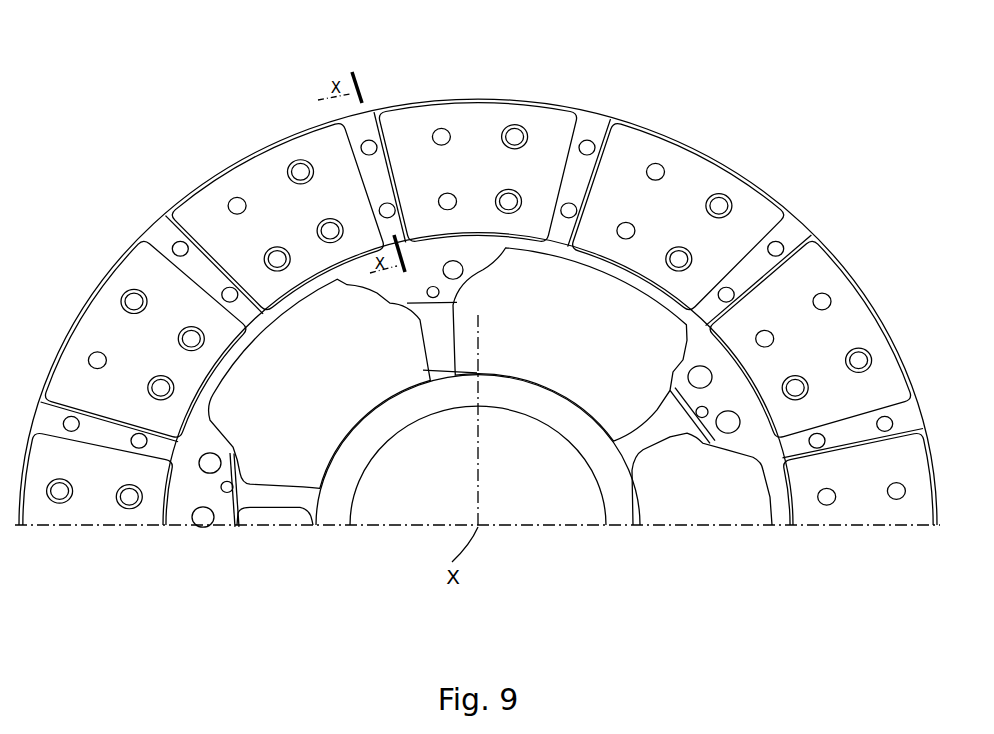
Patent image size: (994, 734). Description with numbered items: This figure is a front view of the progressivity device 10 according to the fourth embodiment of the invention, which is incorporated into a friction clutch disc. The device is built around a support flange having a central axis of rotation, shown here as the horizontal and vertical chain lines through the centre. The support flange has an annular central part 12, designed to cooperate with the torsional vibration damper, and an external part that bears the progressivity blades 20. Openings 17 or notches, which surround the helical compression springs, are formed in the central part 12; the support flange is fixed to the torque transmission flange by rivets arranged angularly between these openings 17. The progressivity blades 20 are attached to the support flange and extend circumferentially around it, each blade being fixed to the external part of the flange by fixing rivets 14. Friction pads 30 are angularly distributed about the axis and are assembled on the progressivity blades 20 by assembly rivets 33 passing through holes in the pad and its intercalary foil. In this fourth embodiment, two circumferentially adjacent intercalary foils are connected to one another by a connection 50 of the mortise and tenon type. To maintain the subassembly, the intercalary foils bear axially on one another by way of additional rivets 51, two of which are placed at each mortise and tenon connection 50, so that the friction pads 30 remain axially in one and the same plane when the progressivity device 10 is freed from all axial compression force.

The progressivity device 10 is at (765, 110).
The annular central part 12 is at (360, 443).
The fixing rivets 14 is at (511, 131).
The openings 17 is at (290, 447).
The progressivity blades 20 is at (262, 183).
The friction pad 30 is at (117, 400).
The assembly rivets 33 is at (440, 131).
The connection 50 is at (567, 172).
The additional rivets 51 is at (594, 150).